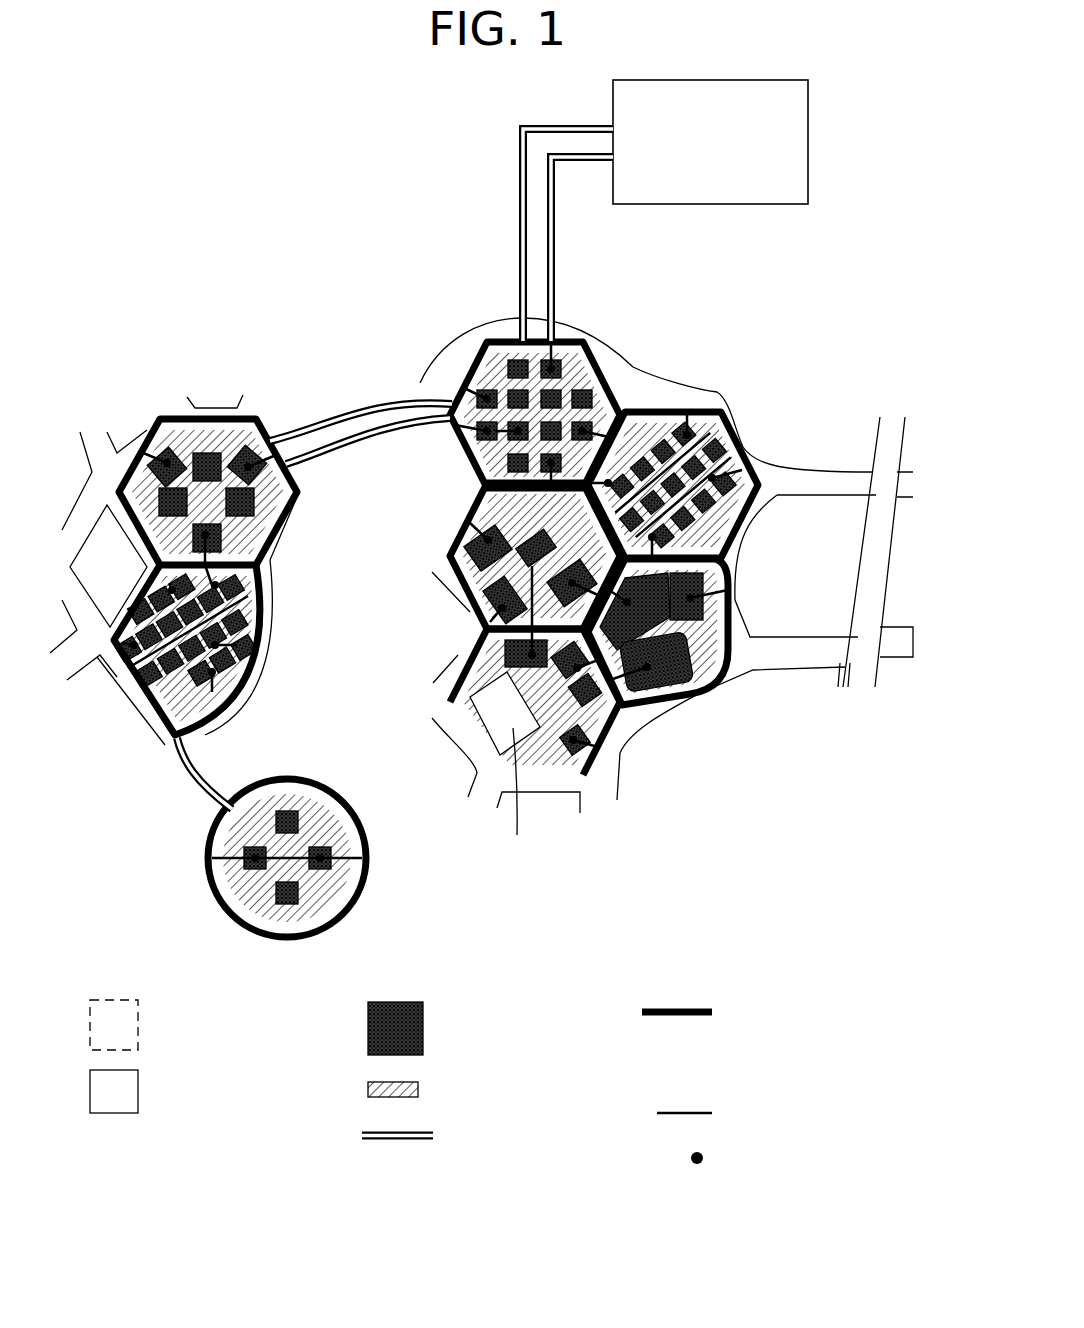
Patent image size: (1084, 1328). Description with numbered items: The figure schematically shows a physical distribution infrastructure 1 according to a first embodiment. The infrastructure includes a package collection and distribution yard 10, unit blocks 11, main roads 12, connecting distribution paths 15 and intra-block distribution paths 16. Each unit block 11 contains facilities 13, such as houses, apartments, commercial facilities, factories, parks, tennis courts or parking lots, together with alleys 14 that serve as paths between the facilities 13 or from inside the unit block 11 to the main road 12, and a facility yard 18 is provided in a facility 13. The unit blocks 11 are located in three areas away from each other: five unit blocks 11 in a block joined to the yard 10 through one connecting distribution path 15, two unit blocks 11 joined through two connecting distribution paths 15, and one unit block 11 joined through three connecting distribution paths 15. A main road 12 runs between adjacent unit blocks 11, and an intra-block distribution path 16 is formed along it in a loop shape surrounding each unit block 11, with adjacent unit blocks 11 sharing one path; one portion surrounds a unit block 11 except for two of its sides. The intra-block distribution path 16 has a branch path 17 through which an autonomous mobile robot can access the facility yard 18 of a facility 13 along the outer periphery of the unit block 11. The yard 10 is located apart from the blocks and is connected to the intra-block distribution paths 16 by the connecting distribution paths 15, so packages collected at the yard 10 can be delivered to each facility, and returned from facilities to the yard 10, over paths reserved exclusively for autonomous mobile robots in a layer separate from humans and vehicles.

The physical distribution infrastructure 1 is at (242, 254).
The package collection and distribution yard 10 is at (810, 140).
The unit block 11 is at (216, 1025).
The main road 12 is at (481, 715).
The facility 13 is at (424, 707).
The alley 14 is at (436, 729).
The connecting distribution path 15 is at (396, 663).
The intra-block distribution path 16 is at (502, 707).
The branch path 17 is at (532, 734).
The facility yard 18 is at (539, 768).